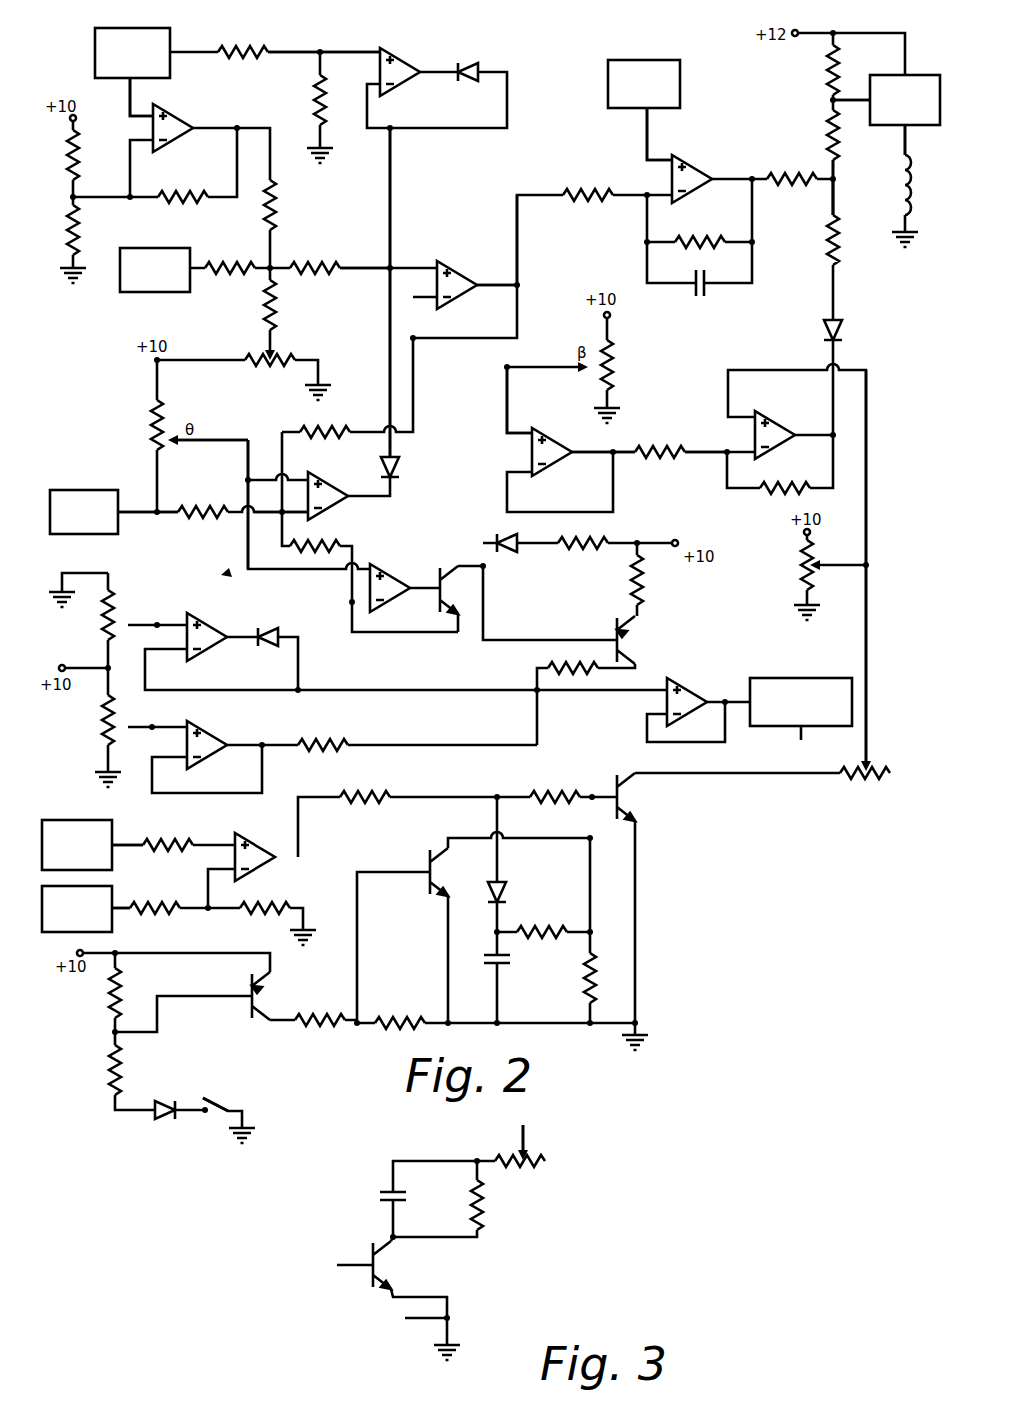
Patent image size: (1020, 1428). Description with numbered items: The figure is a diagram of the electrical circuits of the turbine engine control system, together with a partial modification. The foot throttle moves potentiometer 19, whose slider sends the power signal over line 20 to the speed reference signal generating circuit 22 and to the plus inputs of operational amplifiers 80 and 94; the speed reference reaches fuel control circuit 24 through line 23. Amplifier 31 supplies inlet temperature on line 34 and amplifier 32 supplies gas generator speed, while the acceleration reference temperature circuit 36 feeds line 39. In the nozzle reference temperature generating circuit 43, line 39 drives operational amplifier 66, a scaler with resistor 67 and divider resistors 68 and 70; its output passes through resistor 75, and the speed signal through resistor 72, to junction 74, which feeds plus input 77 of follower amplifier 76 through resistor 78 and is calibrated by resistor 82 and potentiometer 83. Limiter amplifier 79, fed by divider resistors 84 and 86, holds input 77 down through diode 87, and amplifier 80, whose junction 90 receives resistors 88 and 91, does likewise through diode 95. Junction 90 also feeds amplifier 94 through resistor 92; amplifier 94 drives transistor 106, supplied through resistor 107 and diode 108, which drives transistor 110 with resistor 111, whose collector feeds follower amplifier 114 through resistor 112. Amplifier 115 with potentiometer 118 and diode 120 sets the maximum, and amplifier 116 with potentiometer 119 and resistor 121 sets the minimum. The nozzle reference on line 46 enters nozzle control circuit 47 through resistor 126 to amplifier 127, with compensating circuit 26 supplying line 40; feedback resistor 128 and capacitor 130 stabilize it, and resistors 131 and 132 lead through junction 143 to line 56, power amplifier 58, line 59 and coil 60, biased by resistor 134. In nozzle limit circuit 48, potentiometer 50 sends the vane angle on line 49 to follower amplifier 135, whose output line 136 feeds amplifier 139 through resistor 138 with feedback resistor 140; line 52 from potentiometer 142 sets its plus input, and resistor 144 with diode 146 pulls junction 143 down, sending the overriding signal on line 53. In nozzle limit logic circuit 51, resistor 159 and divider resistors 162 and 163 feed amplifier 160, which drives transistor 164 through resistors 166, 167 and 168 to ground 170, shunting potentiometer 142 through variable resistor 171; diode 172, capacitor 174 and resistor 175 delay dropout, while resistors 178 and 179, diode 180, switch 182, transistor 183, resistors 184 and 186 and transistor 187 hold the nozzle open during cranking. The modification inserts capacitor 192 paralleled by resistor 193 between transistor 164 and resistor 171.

In FIG. 2, the potentiometer 19 is at (153, 430).
In FIG. 2, the line 20 is at (210, 442).
In FIG. 2, the speed reference signal generating circuit 22 is at (225, 578).
In FIG. 2, the line 23 is at (727, 702).
In FIG. 2, the fuel control circuit 24 is at (785, 735).
In FIG. 2, the turbine inlet temperature compensating circuit 26 is at (682, 82).
In FIG. 2, the amplifier 31 is at (88, 490).
In FIG. 2, the amplifier 32 is at (122, 292).
In FIG. 2, the line 34 is at (157, 515).
In FIG. 2, the acceleration reference temperature signal generating circuit 36 is at (95, 40).
In FIG. 2, the line 39 is at (132, 85).
In FIG. 2, the line 40 is at (647, 125).
In FIG. 2, the nozzle reference temperature generating circuit 43 is at (322, 49).
In FIG. 2, the line 46 is at (520, 283).
In FIG. 2, the nozzle control circuit 47 is at (678, 44).
In FIG. 2, the nozzle limit circuit 48 is at (710, 463).
In FIG. 2, the line 49 is at (507, 408).
In FIG. 2, the potentiometer 50 is at (615, 356).
In FIG. 2, the nozzle limit logic circuit 51 is at (78, 810).
In FIG. 2, the line 52 is at (772, 370).
In FIG. 3, the line 52 is at (527, 1135).
In FIG. 2, the line 53 is at (836, 212).
In FIG. 2, the power amplifier input line 56 is at (830, 100).
In FIG. 2, the power amplifier 58 is at (900, 75).
In FIG. 2, the line 59 is at (905, 140).
In FIG. 2, the coil 60 is at (903, 180).
In FIG. 2, the operational amplifier 66 is at (185, 128).
In FIG. 2, the resistor 67 is at (185, 192).
In FIG. 2, the resistor 68 is at (76, 172).
In FIG. 2, the resistor 70 is at (78, 228).
In FIG. 2, the resistor 72 is at (232, 262).
In FIG. 2, the junction 74 is at (293, 265).
In FIG. 2, the resistor 75 is at (274, 200).
In FIG. 2, the operational amplifier 76 is at (460, 282).
In FIG. 2, the plus input 77 is at (392, 265).
In FIG. 2, the resistor 78 is at (330, 275).
In FIG. 2, the operational amplifier 79 is at (405, 72).
In FIG. 2, the operational amplifier 80 is at (325, 492).
In FIG. 2, the resistor 82 is at (267, 312).
In FIG. 2, the potentiometer 83 is at (262, 372).
In FIG. 2, the resistor 84 is at (245, 47).
In FIG. 2, the resistor 86 is at (315, 110).
In FIG. 2, the diode 87 is at (478, 64).
In FIG. 2, the resistor 88 is at (198, 516).
In FIG. 2, the junction 90 is at (283, 514).
In FIG. 2, the resistor 91 is at (333, 427).
In FIG. 2, the resistor 92 is at (316, 550).
In FIG. 2, the operational amplifier 94 is at (392, 576).
In FIG. 2, the diode 95 is at (403, 472).
In FIG. 2, the NPN transistor 106 is at (441, 568).
In FIG. 2, the resistor 107 is at (575, 552).
In FIG. 2, the diode 108 is at (507, 556).
In FIG. 2, the PNP transistor 110 is at (622, 642).
In FIG. 2, the resistor 111 is at (643, 580).
In FIG. 2, the resistor 112 is at (558, 665).
In FIG. 2, the operational amplifier 114 is at (690, 700).
In FIG. 2, the operational amplifier 115 is at (215, 637).
In FIG. 2, the operational amplifier 116 is at (215, 745).
In FIG. 2, the potentiometer 118 is at (115, 622).
In FIG. 2, the potentiometer 119 is at (108, 727).
In FIG. 2, the diode 120 is at (264, 650).
In FIG. 2, the resistor 121 is at (340, 745).
In FIG. 2, the resistor 126 is at (578, 192).
In FIG. 2, the operational amplifier 127 is at (700, 175).
In FIG. 2, the resistor 128 is at (702, 240).
In FIG. 2, the capacitor 130 is at (692, 295).
In FIG. 2, the resistor 131 is at (795, 182).
In FIG. 2, the resistor 132 is at (830, 147).
In FIG. 2, the resistor 134 is at (828, 67).
In FIG. 2, the operational amplifier 135 is at (556, 442).
In FIG. 2, the output line 136 is at (614, 450).
In FIG. 2, the resistor 138 is at (668, 452).
In FIG. 2, the operational amplifier 139 is at (778, 428).
In FIG. 2, the resistor 140 is at (775, 488).
In FIG. 2, the potentiometer 142 is at (802, 572).
In FIG. 2, the junction 143 is at (835, 182).
In FIG. 2, the resistor 144 is at (828, 258).
In FIG. 2, the diode 146 is at (845, 332).
In FIG. 2, the resistor 159 is at (185, 837).
In FIG. 2, the operational amplifier 160 is at (262, 868).
In FIG. 2, the resistor 162 is at (175, 912).
In FIG. 2, the resistor 163 is at (268, 905).
In FIG. 2, the transistor 164 is at (640, 805).
In FIG. 3, the transistor 164 is at (380, 1260).
In FIG. 2, the resistor 166 is at (375, 792).
In FIG. 2, the resistor 167 is at (568, 792).
In FIG. 2, the resistor 168 is at (585, 990).
In FIG. 2, the ground 170 is at (640, 1023).
In FIG. 3, the ground 170 is at (450, 1318).
In FIG. 2, the variable resistor 171 is at (845, 785).
In FIG. 3, the variable resistor 171 is at (540, 1168).
In FIG. 2, the diode 172 is at (500, 885).
In FIG. 2, the capacitor 174 is at (512, 960).
In FIG. 2, the resistor 175 is at (543, 930).
In FIG. 2, the resistor 178 is at (110, 990).
In FIG. 2, the resistor 179 is at (112, 1070).
In FIG. 2, the diode 180 is at (165, 1122).
In FIG. 2, the switch 182 is at (232, 1103).
In FIG. 2, the transistor 183 is at (262, 985).
In FIG. 2, the resistor 184 is at (318, 1030).
In FIG. 2, the resistor 186 is at (400, 1020).
In FIG. 2, the transistor 187 is at (428, 862).
In FIG. 3, the capacitor 192 is at (382, 1200).
In FIG. 3, the resistor 193 is at (483, 1210).